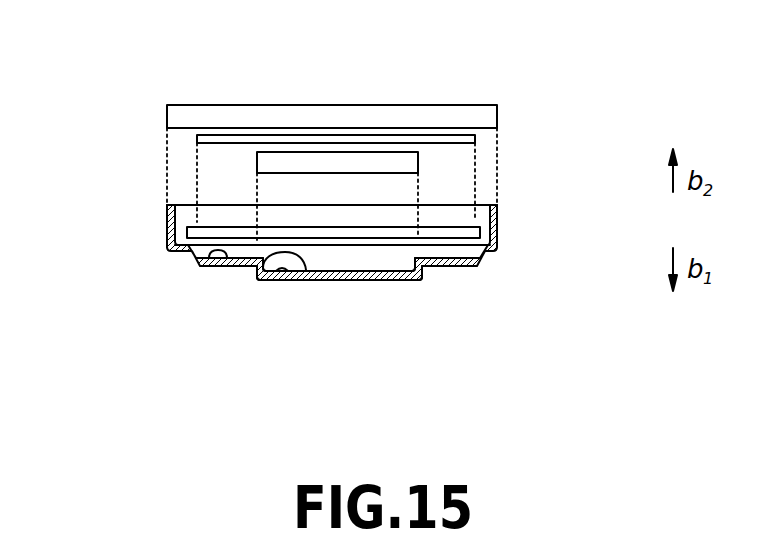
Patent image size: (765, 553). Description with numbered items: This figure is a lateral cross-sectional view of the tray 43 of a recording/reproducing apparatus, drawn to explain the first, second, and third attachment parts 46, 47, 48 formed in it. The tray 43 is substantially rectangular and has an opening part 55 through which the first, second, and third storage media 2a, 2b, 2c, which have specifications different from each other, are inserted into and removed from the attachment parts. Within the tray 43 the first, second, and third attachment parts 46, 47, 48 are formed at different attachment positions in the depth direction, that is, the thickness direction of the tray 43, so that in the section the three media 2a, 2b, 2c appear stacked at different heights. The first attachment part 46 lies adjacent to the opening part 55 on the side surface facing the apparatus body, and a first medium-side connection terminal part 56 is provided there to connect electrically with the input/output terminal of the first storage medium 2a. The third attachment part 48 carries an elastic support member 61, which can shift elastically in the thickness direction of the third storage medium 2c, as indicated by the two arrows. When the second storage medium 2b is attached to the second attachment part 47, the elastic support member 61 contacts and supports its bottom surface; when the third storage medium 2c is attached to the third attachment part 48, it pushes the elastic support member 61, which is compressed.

The first storage medium 2a is at (407, 105).
The second storage medium 2b is at (457, 143).
The third storage medium 2c is at (282, 175).
The tray 43 is at (324, 273).
The first attachment part 46 is at (163, 238).
The second attachment part 47 is at (197, 265).
The third attachment part 48 is at (274, 282).
The opening part 55 is at (490, 216).
The first medium-side connection terminal part 56 is at (213, 227).
The elastic support member 61 is at (258, 268).